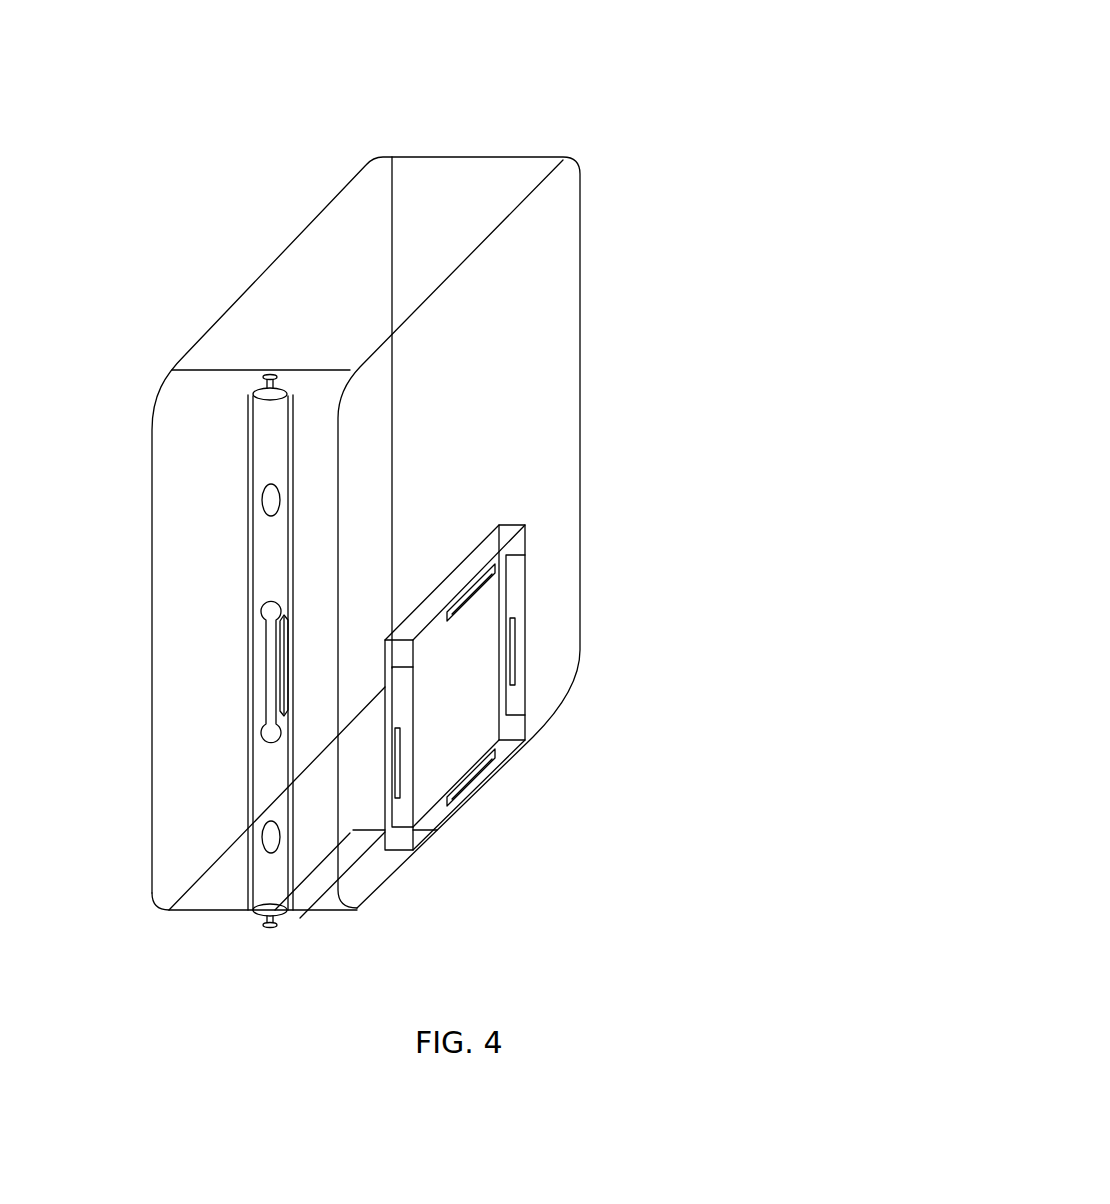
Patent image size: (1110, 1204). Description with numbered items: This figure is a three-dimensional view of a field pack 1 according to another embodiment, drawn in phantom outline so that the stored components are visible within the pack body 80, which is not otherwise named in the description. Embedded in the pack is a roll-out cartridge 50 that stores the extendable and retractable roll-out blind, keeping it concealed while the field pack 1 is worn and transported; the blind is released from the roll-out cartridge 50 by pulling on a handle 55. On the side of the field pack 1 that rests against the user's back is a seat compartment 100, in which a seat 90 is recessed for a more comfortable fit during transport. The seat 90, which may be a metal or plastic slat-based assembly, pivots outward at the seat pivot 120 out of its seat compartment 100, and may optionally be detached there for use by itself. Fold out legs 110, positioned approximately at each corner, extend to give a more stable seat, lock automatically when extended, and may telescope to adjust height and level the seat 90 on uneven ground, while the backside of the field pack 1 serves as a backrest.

The field pack 1 is at (687, 106).
The housing 80 is at (483, 215).
The roll-out cartridge 50 is at (258, 580).
The handle 55 is at (282, 667).
The seat 90 is at (520, 587).
The seat compartment 100 is at (525, 538).
The fold out legs 110 is at (400, 775).
The seat pivot 120 is at (437, 830).